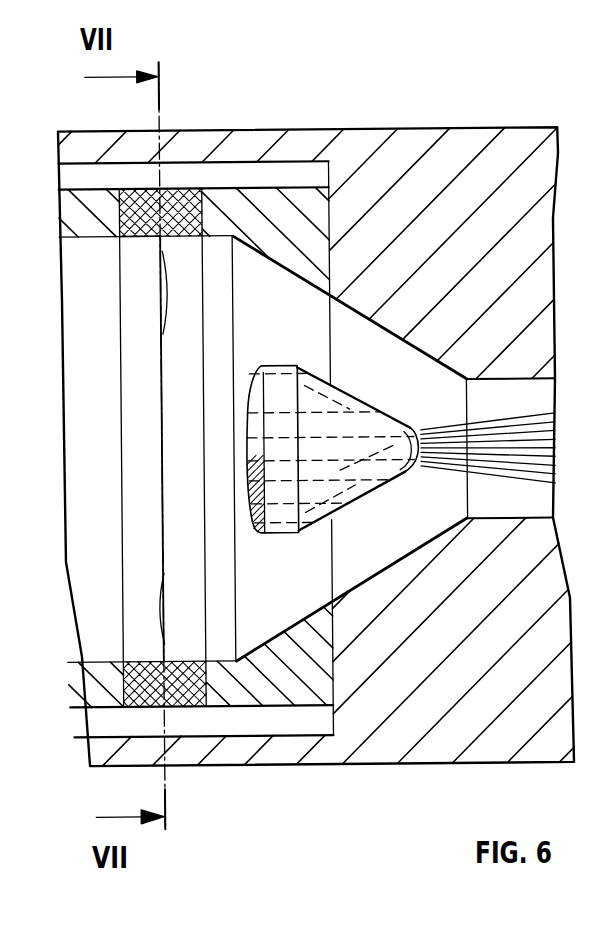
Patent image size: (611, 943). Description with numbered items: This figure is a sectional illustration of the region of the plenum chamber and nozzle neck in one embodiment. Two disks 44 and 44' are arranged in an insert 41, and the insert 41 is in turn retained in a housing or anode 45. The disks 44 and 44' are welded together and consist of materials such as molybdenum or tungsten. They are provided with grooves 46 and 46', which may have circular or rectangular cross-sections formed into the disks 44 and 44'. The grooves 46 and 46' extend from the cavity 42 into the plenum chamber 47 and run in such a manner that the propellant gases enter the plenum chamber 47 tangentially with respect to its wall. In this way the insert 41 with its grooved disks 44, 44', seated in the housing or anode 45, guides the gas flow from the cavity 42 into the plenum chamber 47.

The insert 41 is at (264, 694).
The cavity 42 is at (253, 177).
The disk 44 is at (168, 396).
The disk 44' is at (121, 259).
The housing or anode 45 is at (475, 146).
The groove 46 is at (219, 292).
The groove 46' is at (224, 604).
The plenum chamber 47 is at (375, 554).